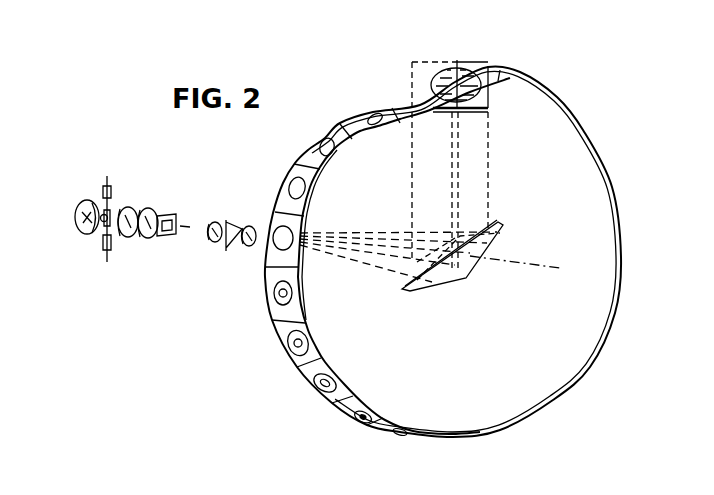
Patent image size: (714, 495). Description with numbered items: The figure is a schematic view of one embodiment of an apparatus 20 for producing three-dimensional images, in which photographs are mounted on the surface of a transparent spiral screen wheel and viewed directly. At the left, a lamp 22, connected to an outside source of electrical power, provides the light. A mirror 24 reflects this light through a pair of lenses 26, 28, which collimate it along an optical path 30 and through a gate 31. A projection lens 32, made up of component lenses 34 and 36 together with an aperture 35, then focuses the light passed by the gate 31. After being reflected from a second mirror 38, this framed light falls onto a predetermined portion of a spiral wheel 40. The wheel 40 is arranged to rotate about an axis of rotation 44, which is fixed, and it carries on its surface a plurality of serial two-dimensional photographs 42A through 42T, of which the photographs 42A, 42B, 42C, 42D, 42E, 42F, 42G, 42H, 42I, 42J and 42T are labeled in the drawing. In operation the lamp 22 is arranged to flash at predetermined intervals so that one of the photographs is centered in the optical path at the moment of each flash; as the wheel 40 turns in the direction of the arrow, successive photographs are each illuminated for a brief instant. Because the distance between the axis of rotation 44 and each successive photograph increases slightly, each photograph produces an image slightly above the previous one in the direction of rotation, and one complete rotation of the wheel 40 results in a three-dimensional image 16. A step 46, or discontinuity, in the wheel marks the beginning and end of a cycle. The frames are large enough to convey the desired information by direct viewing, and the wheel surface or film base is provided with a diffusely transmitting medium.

The three-dimensional image 16 is at (475, 36).
The apparatus 20 is at (219, 348).
The lamp 22 is at (104, 195).
The mirror 24 is at (80, 233).
The lens 26 is at (132, 242).
The lens 28 is at (147, 242).
The optical path 30 is at (195, 228).
The gate 31 is at (173, 213).
The projection lens 32 is at (213, 256).
The component lens 34 is at (218, 224).
The aperture 35 is at (233, 247).
The component lens 36 is at (253, 230).
The mirror 38 is at (435, 281).
The spiral wheel 40 is at (587, 130).
The photograph 42A is at (427, 108).
The photograph 42B is at (355, 118).
The photograph 42C is at (333, 128).
The photograph 42D is at (292, 172).
The photograph 42E is at (268, 257).
The photograph 42F is at (270, 314).
The photograph 42G is at (282, 331).
The photograph 42H is at (307, 375).
The photograph 42I is at (345, 412).
The photograph 42J is at (405, 434).
The photograph 42T is at (510, 68).
The axis of rotation 44 is at (515, 263).
The step 46 is at (490, 84).